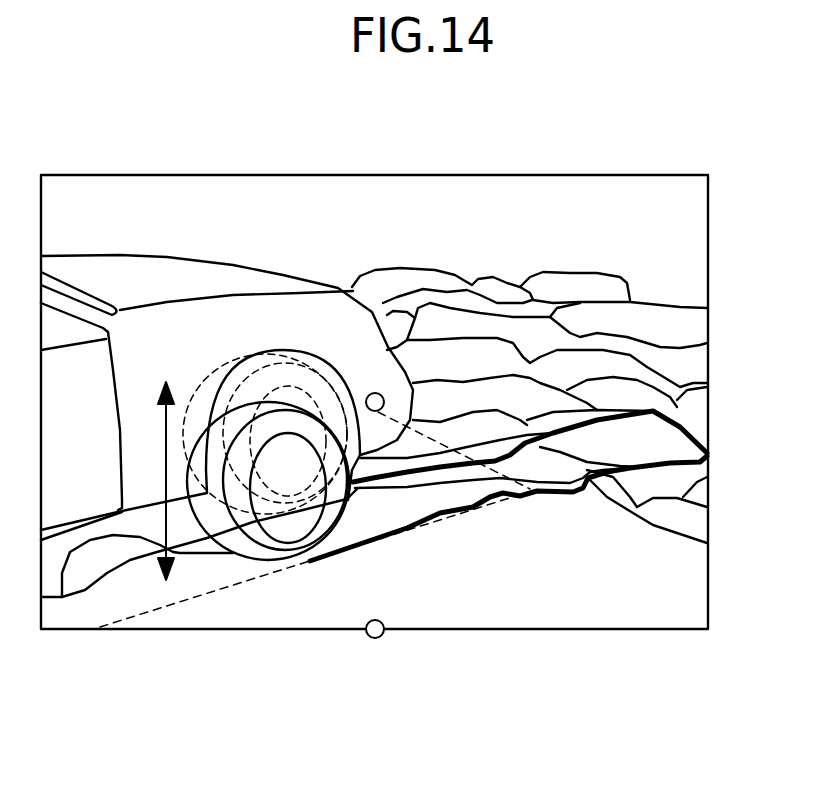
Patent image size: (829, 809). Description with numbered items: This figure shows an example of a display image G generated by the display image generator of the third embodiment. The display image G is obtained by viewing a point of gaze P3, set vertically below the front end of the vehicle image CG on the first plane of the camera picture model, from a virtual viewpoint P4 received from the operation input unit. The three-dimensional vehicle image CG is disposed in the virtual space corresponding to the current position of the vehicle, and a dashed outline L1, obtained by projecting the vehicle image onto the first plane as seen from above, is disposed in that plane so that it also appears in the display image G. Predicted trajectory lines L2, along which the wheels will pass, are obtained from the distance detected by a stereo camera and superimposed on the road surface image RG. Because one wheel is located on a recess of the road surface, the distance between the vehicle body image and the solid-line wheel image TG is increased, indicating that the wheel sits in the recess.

The display image G is at (374, 386).
The vehicle image CG is at (153, 275).
The wheel image TG is at (282, 563).
The point of gaze P3 is at (376, 393).
The virtual viewpoint P4 is at (375, 639).
The outline L1 is at (220, 590).
The predicted trajectory lines L2 is at (628, 465).
The road surface image RG is at (690, 522).